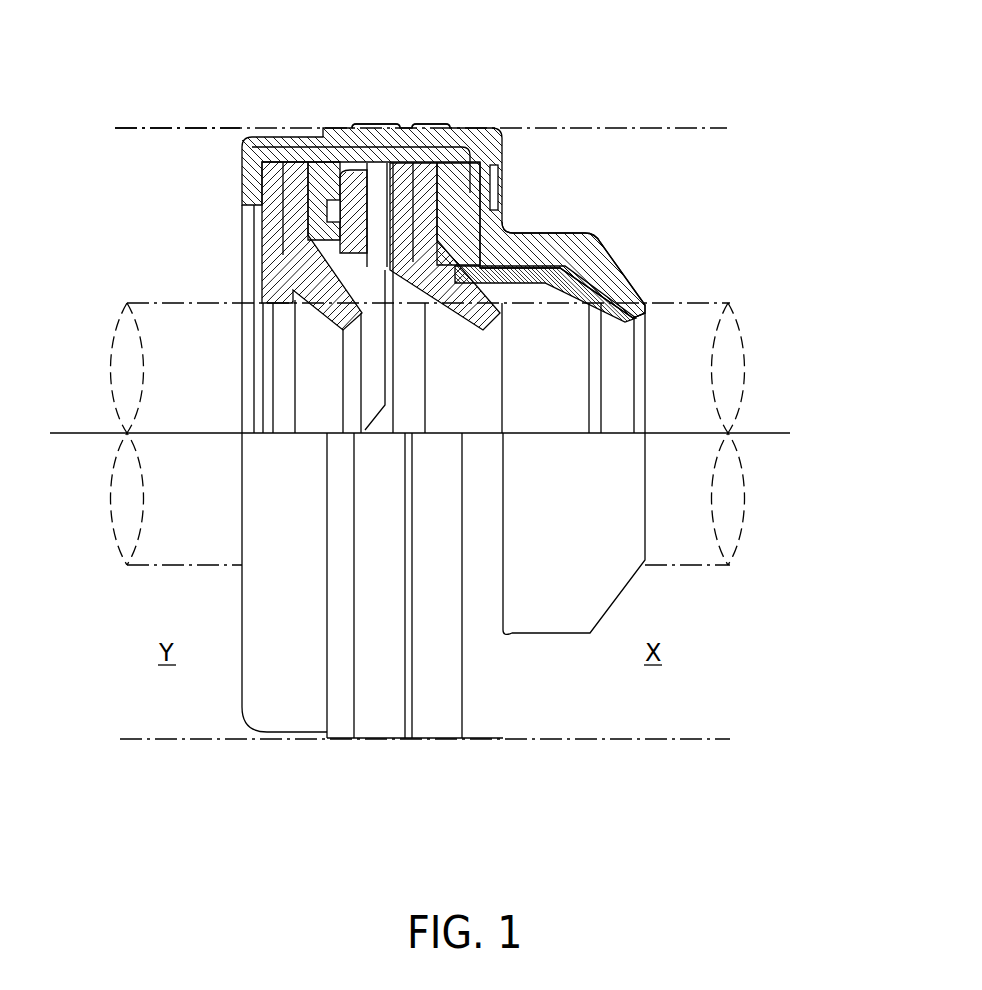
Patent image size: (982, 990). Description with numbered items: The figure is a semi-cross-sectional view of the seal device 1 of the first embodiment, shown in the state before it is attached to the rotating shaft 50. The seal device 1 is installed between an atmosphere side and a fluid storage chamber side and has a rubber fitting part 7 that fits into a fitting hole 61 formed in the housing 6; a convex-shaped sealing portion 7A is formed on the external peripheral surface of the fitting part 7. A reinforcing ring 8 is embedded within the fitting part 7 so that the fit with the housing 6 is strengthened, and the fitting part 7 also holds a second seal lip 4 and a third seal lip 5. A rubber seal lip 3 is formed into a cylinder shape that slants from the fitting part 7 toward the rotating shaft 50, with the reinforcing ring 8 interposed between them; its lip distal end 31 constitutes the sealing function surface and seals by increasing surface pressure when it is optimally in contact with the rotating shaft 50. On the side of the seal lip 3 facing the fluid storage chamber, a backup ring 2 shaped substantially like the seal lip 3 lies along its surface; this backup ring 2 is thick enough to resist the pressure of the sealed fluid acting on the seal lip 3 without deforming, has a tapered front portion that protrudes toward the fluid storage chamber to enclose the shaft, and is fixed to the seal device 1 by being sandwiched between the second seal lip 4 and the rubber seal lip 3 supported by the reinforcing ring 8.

The seal device 1 is at (630, 172).
The backup ring 2 is at (528, 290).
The seal lip 3 is at (625, 258).
The lip distal end 31 is at (645, 313).
The second seal lip 4 is at (428, 343).
The third seal lip 5 is at (300, 245).
The housing 6 is at (213, 115).
The fitting hole 61 is at (165, 132).
The fitting part 7 is at (442, 128).
The sealing portion 7A is at (375, 128).
The reinforcing ring 8 is at (503, 145).
The rotating shaft 50 is at (720, 487).